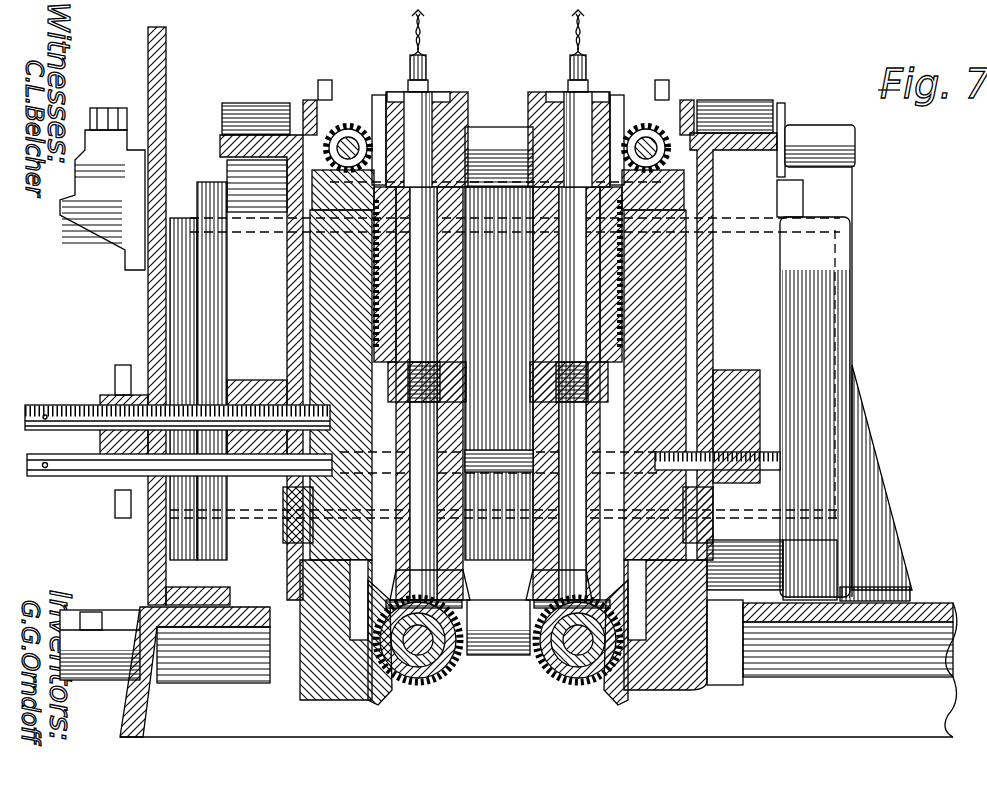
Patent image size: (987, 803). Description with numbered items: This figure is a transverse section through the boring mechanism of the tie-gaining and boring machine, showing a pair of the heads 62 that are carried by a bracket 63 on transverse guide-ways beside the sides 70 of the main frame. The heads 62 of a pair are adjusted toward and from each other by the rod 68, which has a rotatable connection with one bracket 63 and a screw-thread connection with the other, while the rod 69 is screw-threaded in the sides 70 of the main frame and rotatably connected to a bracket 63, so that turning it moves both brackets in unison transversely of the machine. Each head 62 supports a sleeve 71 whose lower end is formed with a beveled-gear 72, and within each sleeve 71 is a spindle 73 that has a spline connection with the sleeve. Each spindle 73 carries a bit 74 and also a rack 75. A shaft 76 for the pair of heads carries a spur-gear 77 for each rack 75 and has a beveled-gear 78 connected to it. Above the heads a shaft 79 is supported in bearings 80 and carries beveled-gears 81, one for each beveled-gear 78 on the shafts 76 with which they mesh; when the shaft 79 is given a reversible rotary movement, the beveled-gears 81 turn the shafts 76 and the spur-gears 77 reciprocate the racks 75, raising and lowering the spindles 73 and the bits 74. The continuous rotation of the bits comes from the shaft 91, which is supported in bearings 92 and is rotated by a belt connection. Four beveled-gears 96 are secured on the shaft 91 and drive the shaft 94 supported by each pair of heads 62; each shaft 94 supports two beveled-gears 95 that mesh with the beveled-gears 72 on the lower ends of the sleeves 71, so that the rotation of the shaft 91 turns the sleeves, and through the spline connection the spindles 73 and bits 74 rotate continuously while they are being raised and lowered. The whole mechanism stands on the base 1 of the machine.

The base 1 is at (534, 736).
The head 62 is at (468, 104).
The bracket 63 is at (256, 138).
The rod 68 is at (74, 478).
The rod 69 is at (66, 398).
The sides of the main frame 70 is at (150, 318).
The sleeve 71 is at (565, 550).
The beveled-gear 72 is at (548, 591).
The spindle 73 is at (565, 256).
The bit 74 is at (427, 62).
The rack 75 is at (392, 296).
The shaft 76 is at (352, 128).
The spur-gear 77 is at (322, 92).
The beveled-gear 78 is at (380, 100).
The shaft 79 is at (815, 130).
The bearing 80 is at (115, 143).
The beveled-gear 81 is at (309, 108).
The shaft 91 is at (506, 660).
The bearing 92 is at (84, 679).
The shaft 94 is at (422, 672).
The beveled-gear 95 is at (455, 682).
The beveled-gear 96 is at (348, 708).